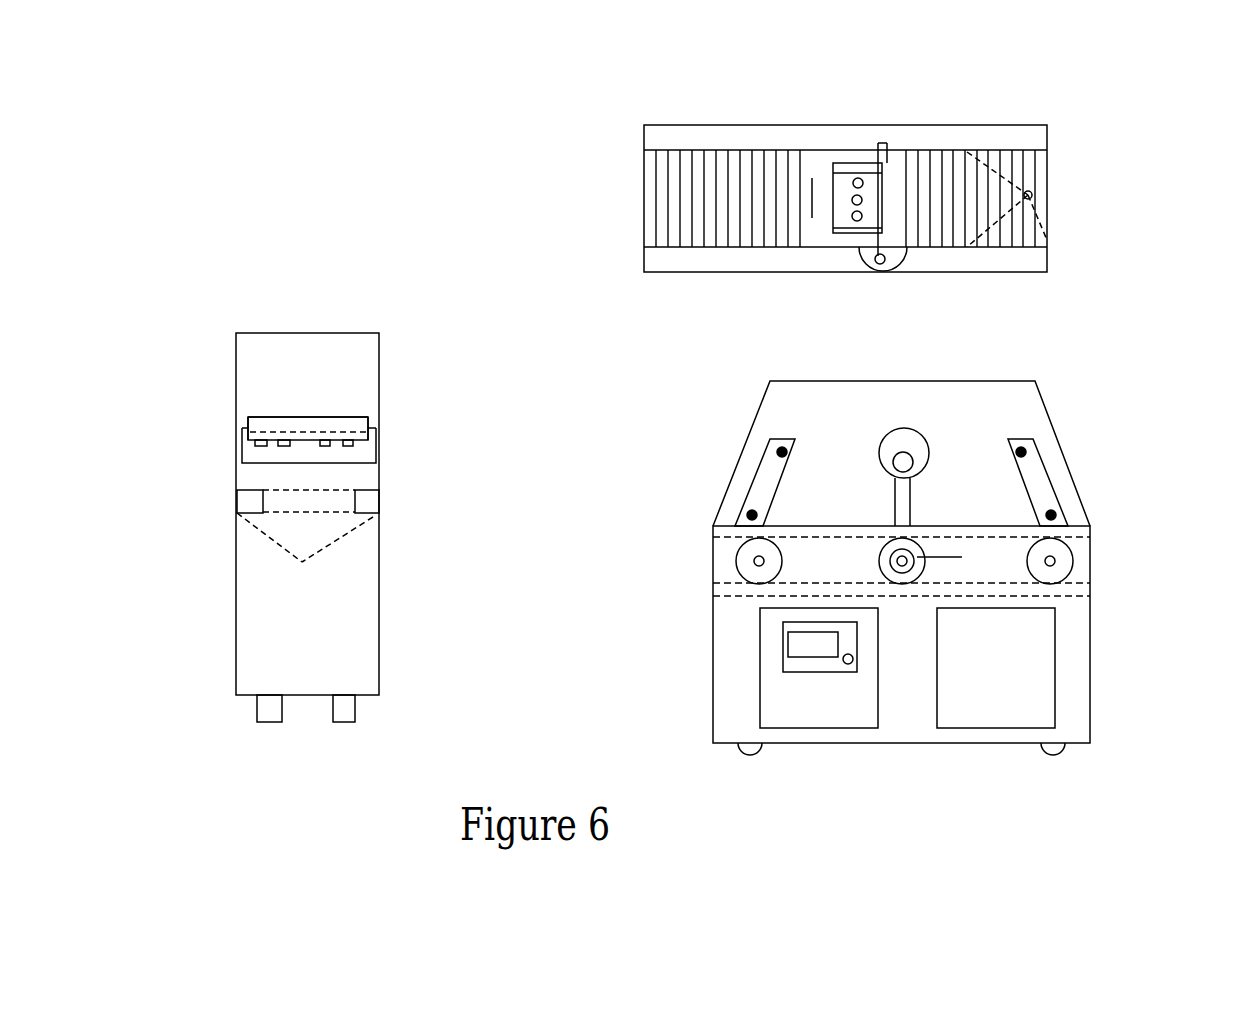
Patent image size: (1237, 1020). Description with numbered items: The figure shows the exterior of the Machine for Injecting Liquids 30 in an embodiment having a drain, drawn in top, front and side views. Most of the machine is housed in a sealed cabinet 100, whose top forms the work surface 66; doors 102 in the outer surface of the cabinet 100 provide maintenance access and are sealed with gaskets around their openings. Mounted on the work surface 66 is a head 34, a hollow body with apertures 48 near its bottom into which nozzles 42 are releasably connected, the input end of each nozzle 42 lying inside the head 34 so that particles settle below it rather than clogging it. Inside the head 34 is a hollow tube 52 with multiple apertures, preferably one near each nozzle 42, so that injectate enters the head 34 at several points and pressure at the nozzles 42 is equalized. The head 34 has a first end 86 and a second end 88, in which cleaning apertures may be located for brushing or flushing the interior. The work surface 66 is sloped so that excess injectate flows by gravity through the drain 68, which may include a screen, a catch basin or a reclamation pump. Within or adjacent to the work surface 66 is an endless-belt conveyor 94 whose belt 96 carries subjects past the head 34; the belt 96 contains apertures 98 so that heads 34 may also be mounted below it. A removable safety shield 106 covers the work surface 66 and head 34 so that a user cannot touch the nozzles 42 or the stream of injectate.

The Machine for Injecting Liquids 30 is at (1110, 452).
The head 34 is at (882, 548).
The nozzle 42 is at (258, 445).
The apertures 48 is at (862, 213).
The hollow tube 52 is at (333, 417).
The work surface 66 is at (955, 137).
The drain 68 is at (1028, 200).
The first end 86 is at (248, 418).
The second end 88 is at (368, 417).
The endless-belt conveyor 94 is at (1073, 545).
The belt 96 is at (707, 152).
The apertures 98 is at (651, 187).
The sealed cabinet 100 is at (1091, 675).
The doors 102 is at (973, 730).
The removable safety shield 106 is at (1053, 425).